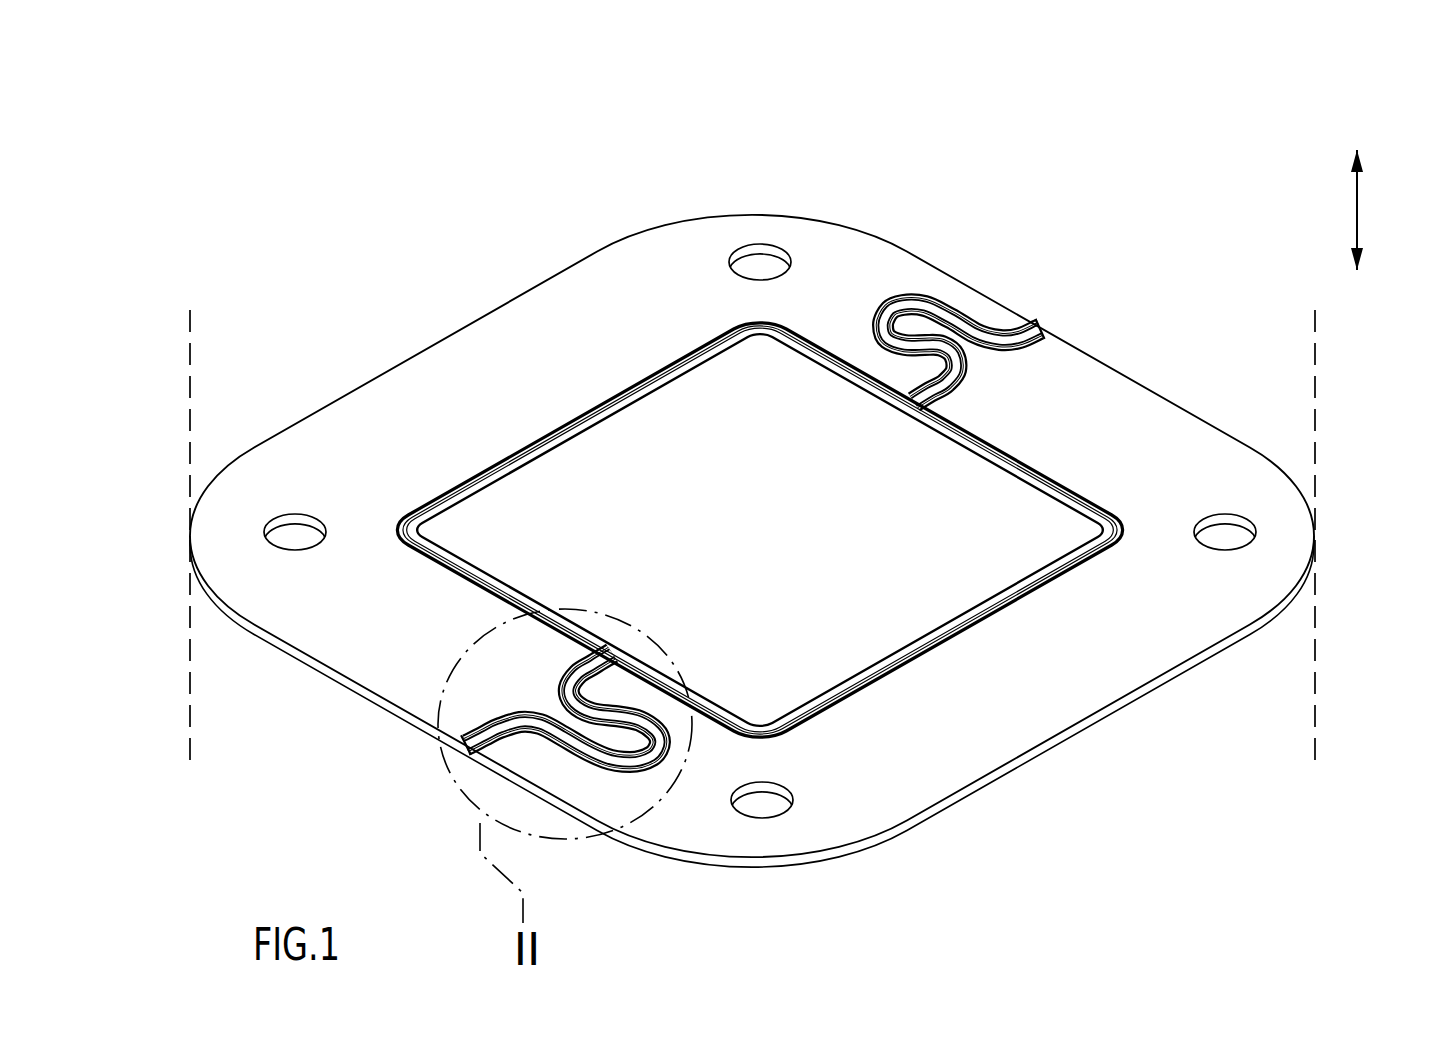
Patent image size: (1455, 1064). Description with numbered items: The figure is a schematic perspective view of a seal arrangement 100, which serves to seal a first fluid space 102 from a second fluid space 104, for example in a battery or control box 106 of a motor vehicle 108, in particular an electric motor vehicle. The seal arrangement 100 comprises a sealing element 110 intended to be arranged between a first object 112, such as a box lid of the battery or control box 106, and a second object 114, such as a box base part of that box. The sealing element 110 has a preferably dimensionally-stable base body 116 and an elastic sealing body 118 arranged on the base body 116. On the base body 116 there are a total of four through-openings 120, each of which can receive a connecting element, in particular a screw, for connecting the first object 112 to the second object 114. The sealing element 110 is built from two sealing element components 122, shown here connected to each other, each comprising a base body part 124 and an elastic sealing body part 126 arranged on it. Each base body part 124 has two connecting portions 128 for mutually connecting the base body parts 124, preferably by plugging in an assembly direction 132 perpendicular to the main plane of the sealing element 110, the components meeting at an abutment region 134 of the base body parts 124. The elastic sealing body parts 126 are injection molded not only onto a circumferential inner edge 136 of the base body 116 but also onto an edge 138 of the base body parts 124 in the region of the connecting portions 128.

The seal arrangement 100 is at (1115, 192).
The first fluid space 102 is at (683, 170).
The second fluid space 104 is at (725, 552).
The battery or control box 106 is at (255, 240).
The motor vehicle 108 is at (310, 192).
The sealing element 110 is at (1170, 240).
The first object 112 is at (190, 390).
The second object 114 is at (190, 688).
The base body 116 is at (340, 640).
The elastic sealing body 118 is at (433, 497).
The through-openings 120 is at (775, 247).
The sealing element components 122 is at (450, 360).
The base body part 124 is at (585, 280).
The elastic sealing body part 126 is at (580, 430).
The connecting portions 128 is at (935, 288).
The assembly direction 132 is at (1357, 205).
The abutment region 134 is at (932, 390).
The circumferential inner edge 136 is at (485, 492).
The edge 138 is at (520, 460).